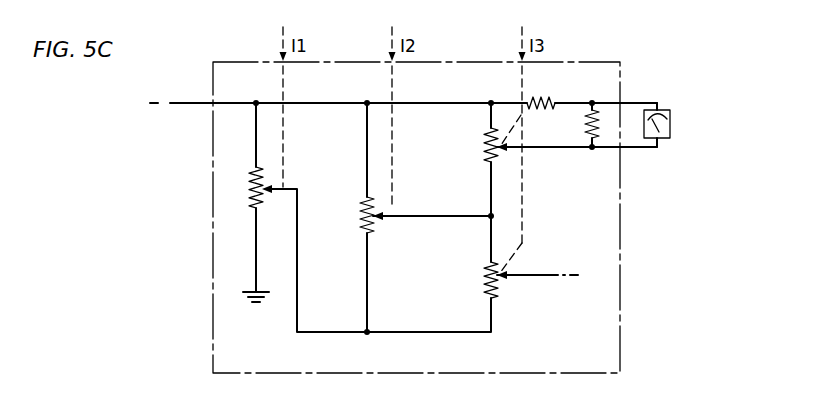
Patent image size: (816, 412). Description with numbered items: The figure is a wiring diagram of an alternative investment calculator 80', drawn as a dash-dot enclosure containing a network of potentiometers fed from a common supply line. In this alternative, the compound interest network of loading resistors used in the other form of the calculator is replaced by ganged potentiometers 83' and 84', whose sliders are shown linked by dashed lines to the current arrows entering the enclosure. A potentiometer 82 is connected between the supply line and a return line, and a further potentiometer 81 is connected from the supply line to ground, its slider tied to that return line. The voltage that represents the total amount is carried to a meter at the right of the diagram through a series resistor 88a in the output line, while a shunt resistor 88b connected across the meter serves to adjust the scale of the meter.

The alternative investment calculator 80' is at (391, 217).
The potentiometer 81 is at (244, 190).
The potentiometer 82 is at (360, 213).
The ganged potentiometer 83' is at (472, 280).
The ganged potentiometer 84' is at (470, 145).
The series resistor 88a is at (551, 78).
The shunt resistor 88b is at (583, 124).